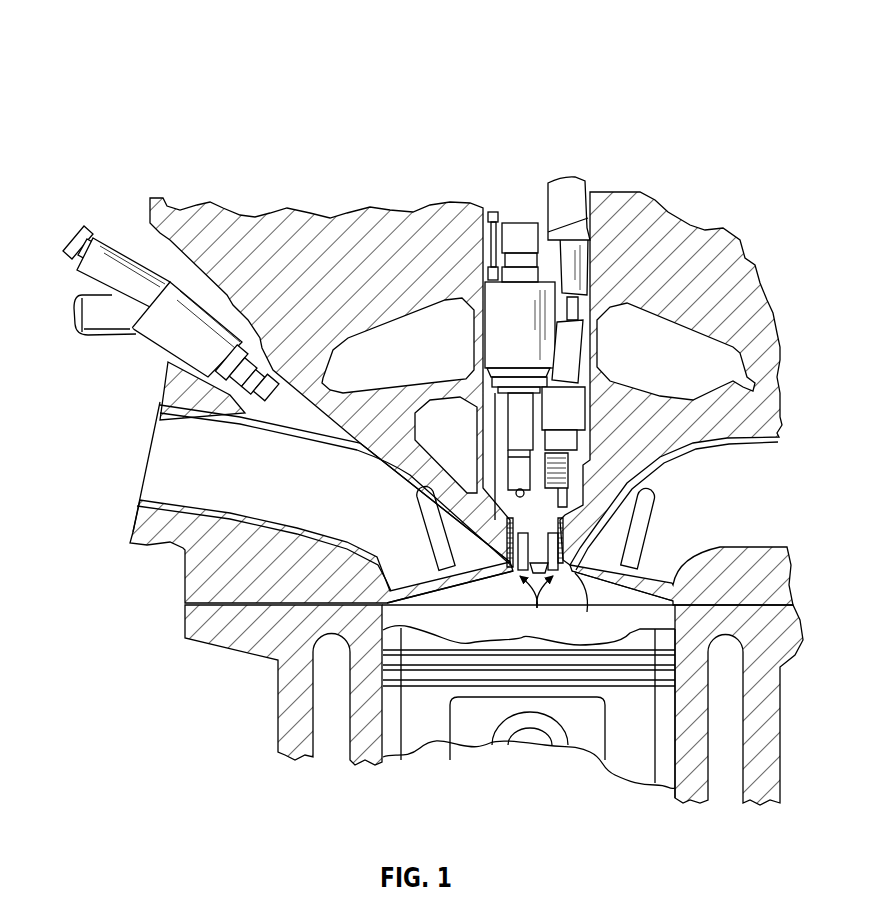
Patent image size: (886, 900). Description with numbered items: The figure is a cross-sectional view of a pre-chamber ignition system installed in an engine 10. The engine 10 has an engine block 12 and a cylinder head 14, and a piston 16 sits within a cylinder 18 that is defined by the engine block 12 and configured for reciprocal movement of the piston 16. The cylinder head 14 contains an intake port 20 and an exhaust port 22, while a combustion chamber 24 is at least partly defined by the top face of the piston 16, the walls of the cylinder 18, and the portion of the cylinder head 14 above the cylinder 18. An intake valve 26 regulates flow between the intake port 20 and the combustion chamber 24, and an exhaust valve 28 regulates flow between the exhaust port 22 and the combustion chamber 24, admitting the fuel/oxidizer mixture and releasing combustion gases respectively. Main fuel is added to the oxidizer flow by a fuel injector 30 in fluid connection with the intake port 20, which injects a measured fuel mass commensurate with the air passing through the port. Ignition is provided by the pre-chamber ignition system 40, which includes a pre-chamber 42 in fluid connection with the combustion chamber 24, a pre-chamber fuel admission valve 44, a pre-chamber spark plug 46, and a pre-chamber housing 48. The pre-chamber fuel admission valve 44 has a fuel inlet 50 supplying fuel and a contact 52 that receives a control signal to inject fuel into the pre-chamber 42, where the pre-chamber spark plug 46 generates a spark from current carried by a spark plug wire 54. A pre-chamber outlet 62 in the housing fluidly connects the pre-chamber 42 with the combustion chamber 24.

The engine 10 is at (100, 47).
The engine block 12 is at (185, 617).
The cylinder head 14 is at (282, 210).
The piston 16 is at (425, 745).
The cylinder 18 is at (673, 745).
The intake port 20 is at (160, 460).
The exhaust port 22 is at (773, 515).
The combustion chamber 24 is at (463, 631).
The intake valve 26 is at (404, 588).
The exhaust valve 28 is at (652, 585).
The fuel injector 30 is at (170, 335).
The pre-chamber ignition system 40 is at (480, 128).
The pre-chamber 42 is at (589, 607).
The pre-chamber fuel admission valve 44 is at (497, 308).
The pre-chamber spark plug 46 is at (568, 380).
The pre-chamber housing 48 is at (492, 430).
The fuel inlet 50 is at (490, 210).
The contact 52 is at (528, 203).
The spark plug wire 54 is at (595, 187).
The pre-chamber outlet 62 is at (536, 609).